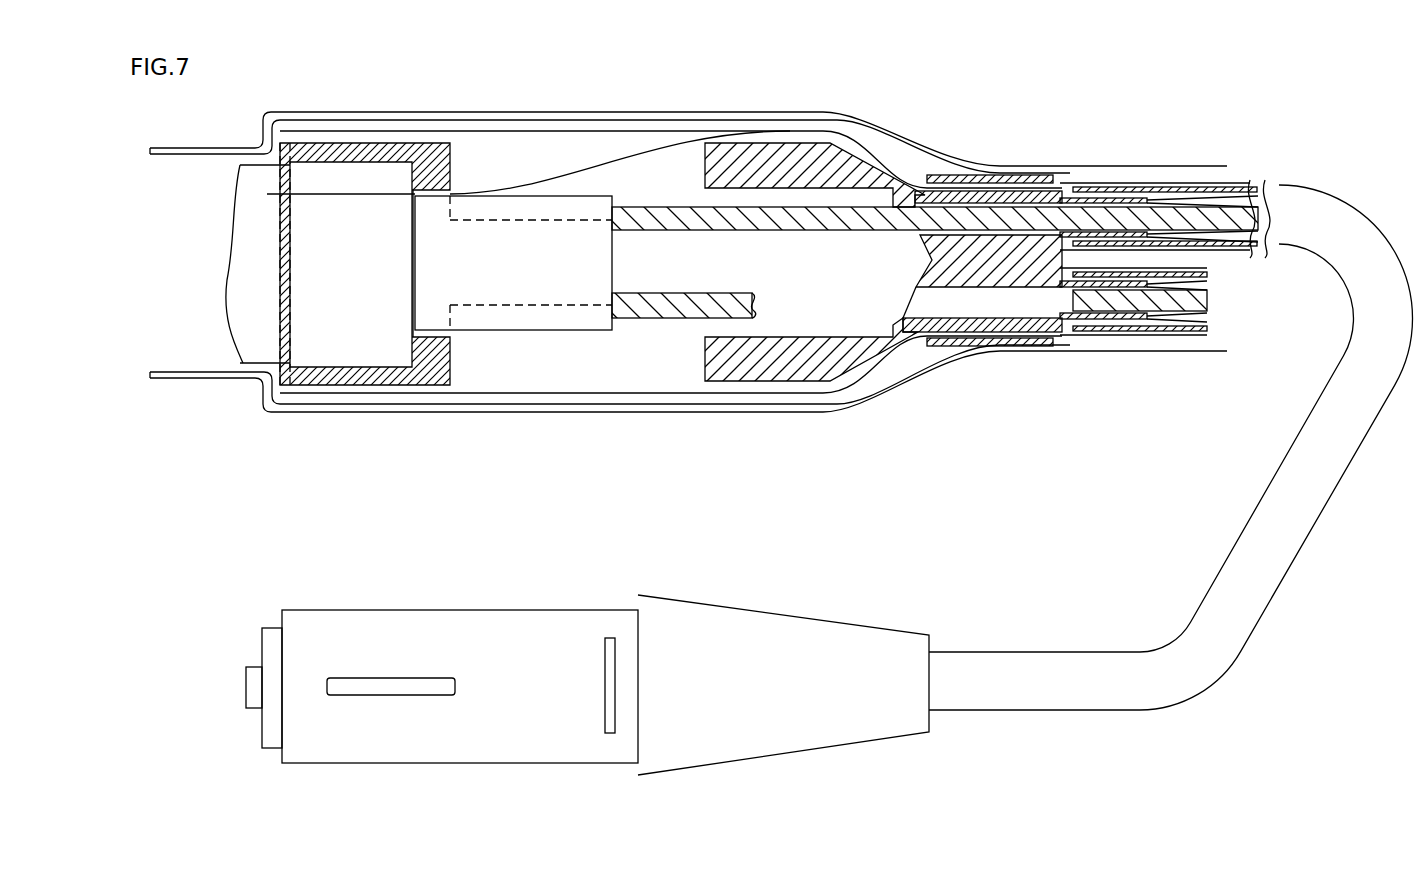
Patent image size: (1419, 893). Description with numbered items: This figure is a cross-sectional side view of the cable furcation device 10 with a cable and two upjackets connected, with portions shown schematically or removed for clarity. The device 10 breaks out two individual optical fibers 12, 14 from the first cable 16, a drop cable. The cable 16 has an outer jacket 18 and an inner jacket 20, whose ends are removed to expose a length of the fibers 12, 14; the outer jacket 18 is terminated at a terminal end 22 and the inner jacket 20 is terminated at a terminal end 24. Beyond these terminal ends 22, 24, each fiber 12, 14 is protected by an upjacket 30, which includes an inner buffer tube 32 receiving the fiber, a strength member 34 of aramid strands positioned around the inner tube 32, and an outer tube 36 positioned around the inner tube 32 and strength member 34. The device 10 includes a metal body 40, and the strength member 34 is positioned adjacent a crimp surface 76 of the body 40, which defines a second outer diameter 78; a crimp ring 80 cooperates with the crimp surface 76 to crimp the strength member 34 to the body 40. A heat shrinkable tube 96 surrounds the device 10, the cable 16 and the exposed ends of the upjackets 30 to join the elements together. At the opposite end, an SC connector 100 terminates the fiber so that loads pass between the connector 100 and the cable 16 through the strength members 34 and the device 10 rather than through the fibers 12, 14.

The cable furcation device 10 is at (773, 381).
The optical fiber 12 is at (782, 218).
The optical fiber 14 is at (653, 306).
The first cable 16 is at (260, 365).
The outer jacket 18 is at (357, 162).
The inner jacket 20 is at (590, 198).
The terminal end 22 is at (415, 352).
The terminal end 24 is at (614, 262).
The upjacket 30 is at (1300, 554).
The inner tube 32 is at (768, 232).
The strength member 34 is at (350, 194).
The outer tube 36 is at (1097, 187).
The body 40 is at (717, 383).
The crimp surface 76 is at (973, 333).
The second outer diameter 78 is at (1022, 333).
The crimp ring 80 is at (988, 172).
The heat shrinkable tube 96 is at (489, 111).
The SC connector 100 is at (462, 608).